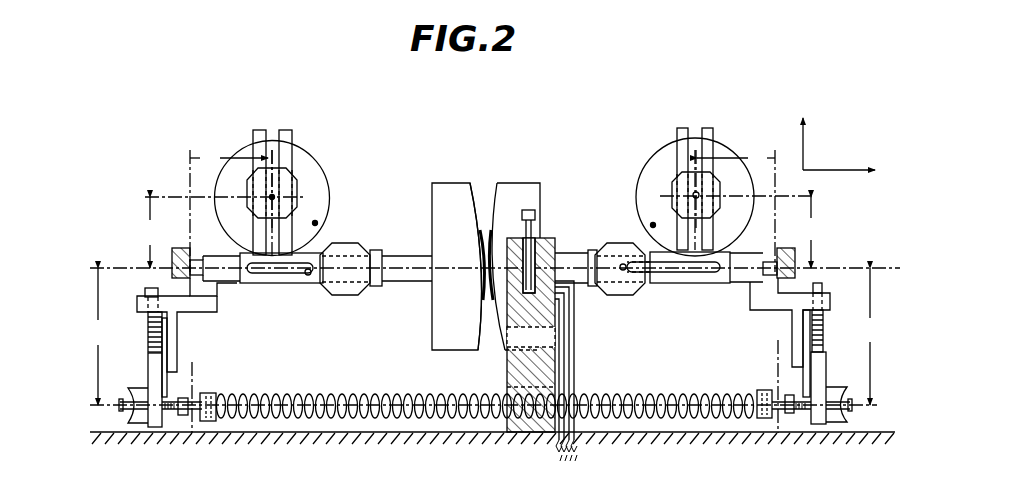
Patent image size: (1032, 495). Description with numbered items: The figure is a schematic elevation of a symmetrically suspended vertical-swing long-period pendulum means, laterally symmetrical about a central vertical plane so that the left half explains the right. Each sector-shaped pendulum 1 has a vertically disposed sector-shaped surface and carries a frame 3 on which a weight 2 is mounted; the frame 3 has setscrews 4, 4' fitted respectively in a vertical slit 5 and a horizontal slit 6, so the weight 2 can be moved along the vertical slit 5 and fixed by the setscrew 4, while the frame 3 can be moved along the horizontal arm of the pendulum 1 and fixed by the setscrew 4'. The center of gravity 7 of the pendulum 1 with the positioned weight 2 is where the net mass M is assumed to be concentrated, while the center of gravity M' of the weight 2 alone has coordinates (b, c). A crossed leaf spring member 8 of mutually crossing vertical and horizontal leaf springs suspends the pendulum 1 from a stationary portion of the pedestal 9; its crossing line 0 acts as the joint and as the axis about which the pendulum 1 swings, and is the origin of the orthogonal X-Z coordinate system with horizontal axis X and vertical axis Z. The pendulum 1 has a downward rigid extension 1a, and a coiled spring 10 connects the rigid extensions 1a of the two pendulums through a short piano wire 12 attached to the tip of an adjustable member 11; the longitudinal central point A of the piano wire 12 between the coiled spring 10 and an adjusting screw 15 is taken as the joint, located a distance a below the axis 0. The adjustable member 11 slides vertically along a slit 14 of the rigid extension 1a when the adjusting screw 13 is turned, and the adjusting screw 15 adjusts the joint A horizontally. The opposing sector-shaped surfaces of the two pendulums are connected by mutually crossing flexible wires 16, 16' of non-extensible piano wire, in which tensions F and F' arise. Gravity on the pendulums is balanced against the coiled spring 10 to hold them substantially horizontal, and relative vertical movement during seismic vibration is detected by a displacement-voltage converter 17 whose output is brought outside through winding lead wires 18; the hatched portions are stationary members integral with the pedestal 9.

The sector-shaped pendulum 1 is at (457, 266).
The rigid extension 1a is at (175, 323).
The weight 2 is at (316, 178).
The frame 3 is at (260, 130).
The setscrew 4 is at (460, 206).
The setscrew 4' is at (482, 287).
The vertical slit 5 is at (276, 130).
The horizontal slit 6 is at (308, 276).
The center of gravity of pendulum 7 is at (324, 220).
The crossed leaf spring member 8 is at (192, 274).
The pedestal 9 is at (487, 434).
The coiled spring 10 is at (403, 420).
The adjustable member 11 is at (150, 377).
The piano wire 12 is at (197, 434).
The adjusting screw 13 is at (148, 290).
The slit 14 is at (166, 357).
The adjusting screw 15 is at (132, 424).
The flexible wire 16 is at (474, 246).
The flexible wire 16' is at (514, 246).
The displacement-voltage converter 17 is at (548, 240).
The winding lead wire 18 is at (583, 450).
The axis of rotation 0 is at (222, 284).
The net mass of pendulum and weight M is at (483, 212).
The center of gravity of weight M' is at (483, 152).
The joint A is at (485, 368).
The tension F is at (495, 276).
The tension F' is at (517, 249).
The vertical ordinate of joint a is at (483, 336).
The horizontal abscissa of center of gravity of weight b is at (482, 157).
The vertical ordinate of center of gravity of weight c is at (480, 232).
The X axis X is at (840, 183).
The Z axis Z is at (802, 128).